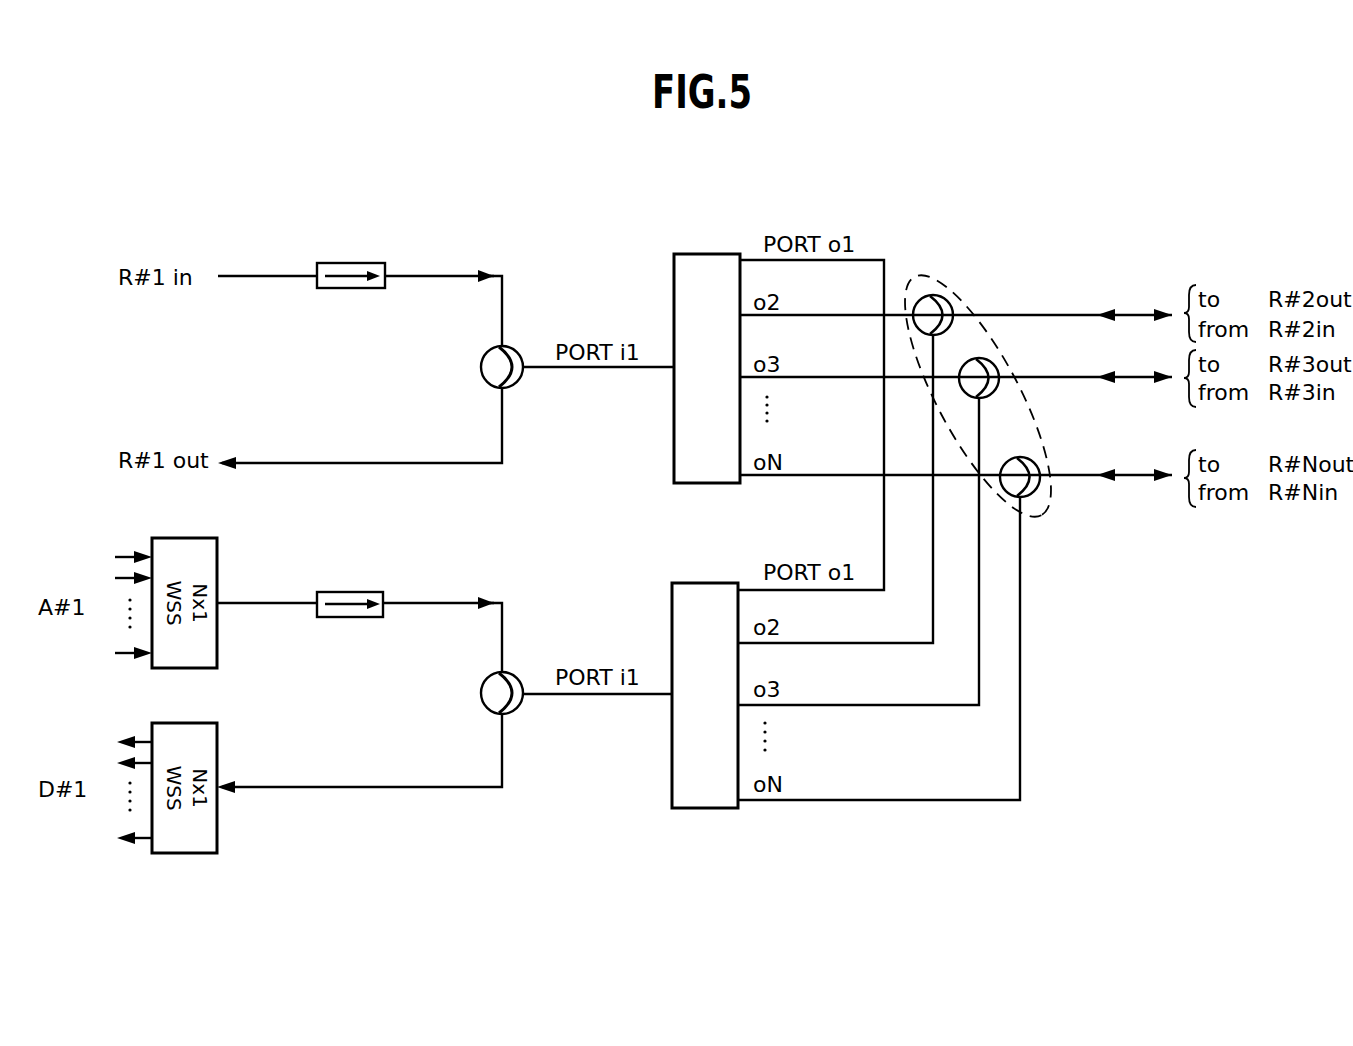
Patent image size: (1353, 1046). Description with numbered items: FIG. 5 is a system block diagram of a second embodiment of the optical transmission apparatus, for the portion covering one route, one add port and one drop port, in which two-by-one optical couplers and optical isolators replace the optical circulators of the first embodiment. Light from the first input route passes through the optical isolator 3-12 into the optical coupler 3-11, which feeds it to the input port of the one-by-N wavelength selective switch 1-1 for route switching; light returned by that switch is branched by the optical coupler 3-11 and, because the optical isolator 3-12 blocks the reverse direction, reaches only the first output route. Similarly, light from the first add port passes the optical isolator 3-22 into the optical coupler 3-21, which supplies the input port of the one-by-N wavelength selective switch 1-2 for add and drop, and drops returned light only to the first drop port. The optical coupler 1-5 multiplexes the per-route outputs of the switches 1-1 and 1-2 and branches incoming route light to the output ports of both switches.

The optical isolator 3-12 is at (355, 289).
The optical coupler 3-11 is at (520, 381).
The (1×N)-port wavelength selective switch for route switching 1-1 is at (707, 252).
The optical coupler 1-5 is at (957, 302).
The optical isolator 3-22 is at (352, 618).
The optical coupler 3-21 is at (520, 707).
The (1×N)-port wavelength selective switch for add and drop 1-2 is at (705, 809).